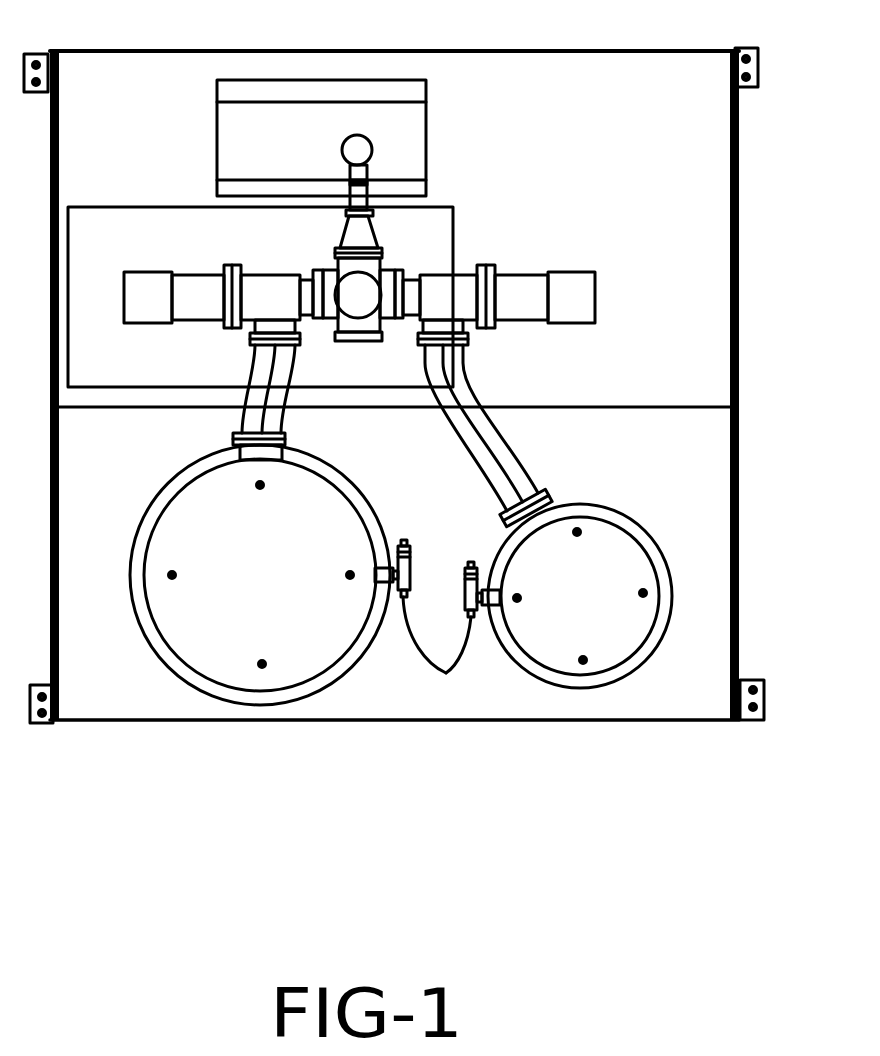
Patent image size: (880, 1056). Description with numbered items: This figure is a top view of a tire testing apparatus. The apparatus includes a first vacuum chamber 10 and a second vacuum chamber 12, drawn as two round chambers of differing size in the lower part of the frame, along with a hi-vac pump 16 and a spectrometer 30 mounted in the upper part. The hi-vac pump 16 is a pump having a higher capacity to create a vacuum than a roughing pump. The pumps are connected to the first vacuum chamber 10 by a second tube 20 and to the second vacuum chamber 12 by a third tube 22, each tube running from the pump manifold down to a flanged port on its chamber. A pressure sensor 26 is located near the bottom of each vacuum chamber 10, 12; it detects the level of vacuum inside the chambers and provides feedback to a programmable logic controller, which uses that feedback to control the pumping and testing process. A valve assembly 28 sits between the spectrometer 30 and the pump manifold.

The first vacuum chamber 10 is at (637, 585).
The second vacuum chamber 12 is at (242, 670).
The hi-vac pump 16 is at (138, 307).
The second tube 20 is at (500, 437).
The third tube 22 is at (242, 421).
The pressure sensor 26 is at (446, 673).
The valve 28 is at (355, 189).
The spectrometer 30 is at (215, 128).